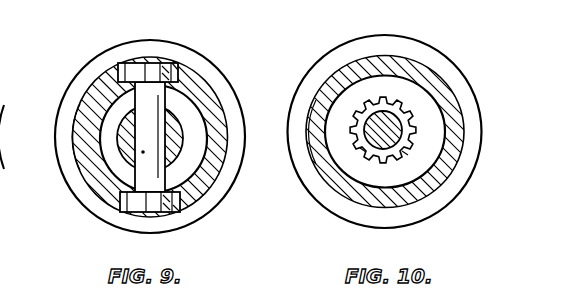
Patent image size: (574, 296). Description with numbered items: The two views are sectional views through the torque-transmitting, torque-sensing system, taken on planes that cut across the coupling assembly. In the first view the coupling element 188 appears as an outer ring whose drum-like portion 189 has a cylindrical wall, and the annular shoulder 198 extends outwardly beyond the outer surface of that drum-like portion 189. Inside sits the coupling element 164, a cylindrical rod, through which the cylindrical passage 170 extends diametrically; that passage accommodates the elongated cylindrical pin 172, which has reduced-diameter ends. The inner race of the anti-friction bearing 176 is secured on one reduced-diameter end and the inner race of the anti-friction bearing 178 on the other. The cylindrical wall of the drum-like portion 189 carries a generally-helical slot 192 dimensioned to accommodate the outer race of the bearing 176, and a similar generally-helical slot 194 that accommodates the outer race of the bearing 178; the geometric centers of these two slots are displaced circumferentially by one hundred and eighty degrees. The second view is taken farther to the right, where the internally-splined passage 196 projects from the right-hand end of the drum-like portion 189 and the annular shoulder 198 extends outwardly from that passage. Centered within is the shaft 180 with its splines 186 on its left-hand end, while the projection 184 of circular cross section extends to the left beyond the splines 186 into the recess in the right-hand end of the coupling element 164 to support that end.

In FIG. 9, the coupling element 164 is at (178, 127).
In FIG. 9, the cylindrical passage 170 is at (142, 153).
In FIG. 9, the elongated cylindrical pin 172 is at (160, 182).
In FIG. 9, the anti-friction bearing 176 is at (174, 62).
In FIG. 9, the anti-friction bearing 178 is at (174, 212).
In FIG. 10, the shaft 180 is at (362, 147).
In FIG. 10, the projection 184 is at (410, 120).
In FIG. 10, the splines 186 is at (398, 100).
In FIG. 9, the coupling element 188 is at (53, 106).
In FIG. 10, the coupling element 188 is at (311, 60).
In FIG. 9, the drum-like portion 189 is at (88, 90).
In FIG. 10, the drum-like portion 189 is at (347, 197).
In FIG. 9, the generally-helical slot 192 is at (113, 66).
In FIG. 9, the generally-helical slot 194 is at (123, 194).
In FIG. 10, the internally-splined passage 196 is at (408, 155).
In FIG. 9, the annular shoulder 198 is at (63, 158).
In FIG. 10, the annular shoulder 198 is at (422, 52).